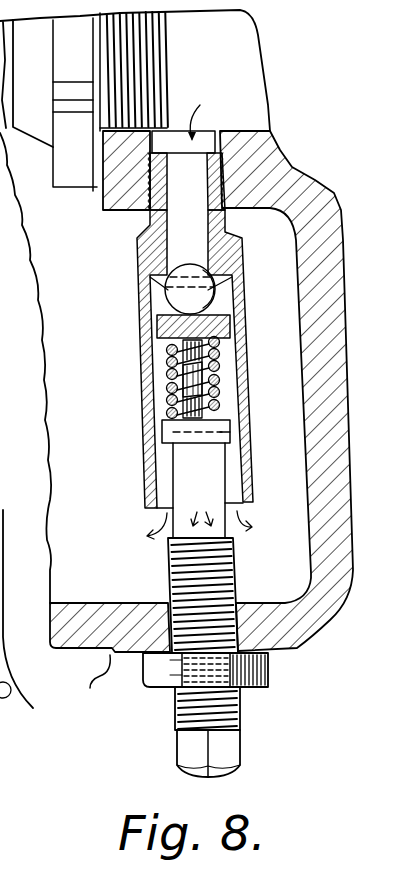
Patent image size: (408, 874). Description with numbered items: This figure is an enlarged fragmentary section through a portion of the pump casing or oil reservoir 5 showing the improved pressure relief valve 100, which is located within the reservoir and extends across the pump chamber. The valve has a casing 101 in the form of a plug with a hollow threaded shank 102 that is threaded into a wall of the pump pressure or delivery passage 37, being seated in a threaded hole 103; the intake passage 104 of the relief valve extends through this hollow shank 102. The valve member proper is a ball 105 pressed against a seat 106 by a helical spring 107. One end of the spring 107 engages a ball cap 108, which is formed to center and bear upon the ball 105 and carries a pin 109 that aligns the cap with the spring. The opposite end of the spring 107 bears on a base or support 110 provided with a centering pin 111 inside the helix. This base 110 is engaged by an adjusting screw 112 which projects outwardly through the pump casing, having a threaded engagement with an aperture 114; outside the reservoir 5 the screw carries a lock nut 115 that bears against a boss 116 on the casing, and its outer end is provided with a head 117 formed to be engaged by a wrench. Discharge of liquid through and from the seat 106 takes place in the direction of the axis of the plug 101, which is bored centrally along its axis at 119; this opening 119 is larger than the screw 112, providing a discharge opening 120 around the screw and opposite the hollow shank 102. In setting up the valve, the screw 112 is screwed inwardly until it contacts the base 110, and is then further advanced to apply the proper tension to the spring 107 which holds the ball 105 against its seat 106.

The reservoir 5 is at (328, 606).
The pressure or delivery passage 37 is at (156, 69).
The pressure relief valve 100 is at (172, 360).
The casing 101 is at (136, 315).
The hollow threaded shank 102 is at (148, 222).
The threaded hole 103 is at (247, 104).
The intake passage 104 is at (191, 110).
The ball 105 is at (163, 296).
The seat 106 is at (167, 273).
The spring 107 is at (178, 395).
The ball cap 108 is at (160, 333).
The pin 109 is at (170, 343).
The base or support 110 is at (163, 432).
The centering pin 111 is at (216, 385).
The adjusting screw 112 is at (230, 557).
The aperture 114 is at (250, 601).
The lock nut 115 is at (270, 663).
The bracket 116 is at (55, 613).
The head 117 is at (242, 740).
The central bore 119 is at (246, 437).
The discharge opening 120 is at (235, 500).